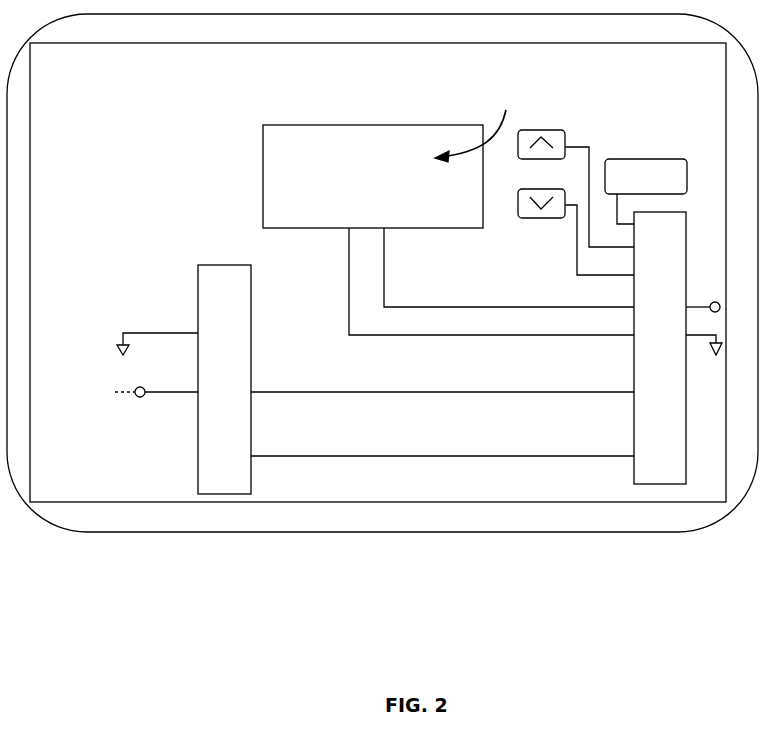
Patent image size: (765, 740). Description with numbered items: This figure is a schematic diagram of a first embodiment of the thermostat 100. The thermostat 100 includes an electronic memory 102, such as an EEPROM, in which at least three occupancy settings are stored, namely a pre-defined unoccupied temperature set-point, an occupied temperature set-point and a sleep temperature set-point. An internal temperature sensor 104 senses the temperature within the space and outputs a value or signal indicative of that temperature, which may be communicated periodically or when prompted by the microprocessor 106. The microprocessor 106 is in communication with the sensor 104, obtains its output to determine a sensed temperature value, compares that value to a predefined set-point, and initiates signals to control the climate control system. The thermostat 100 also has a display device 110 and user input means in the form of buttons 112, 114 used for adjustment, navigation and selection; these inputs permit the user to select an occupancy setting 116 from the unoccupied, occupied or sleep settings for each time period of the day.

The thermostat 100 is at (243, 532).
The electronic memory 102 is at (224, 262).
The internal temperature sensor 104 is at (688, 170).
The microprocessor 106 is at (687, 248).
The display device 110 is at (260, 143).
The button 112 is at (568, 136).
The button 114 is at (518, 198).
The occupancy setting 116 is at (481, 123).